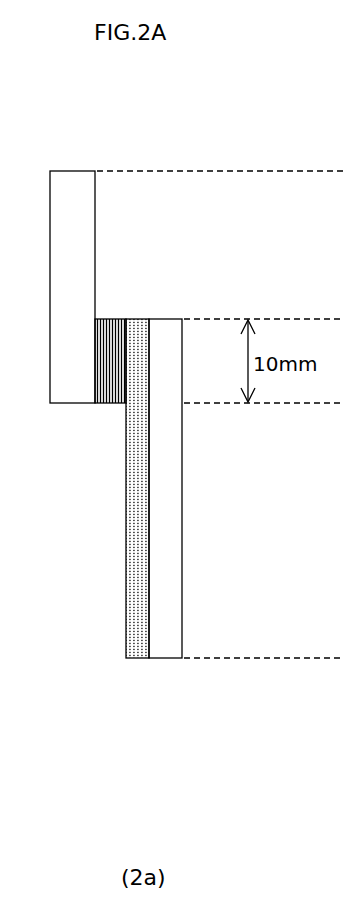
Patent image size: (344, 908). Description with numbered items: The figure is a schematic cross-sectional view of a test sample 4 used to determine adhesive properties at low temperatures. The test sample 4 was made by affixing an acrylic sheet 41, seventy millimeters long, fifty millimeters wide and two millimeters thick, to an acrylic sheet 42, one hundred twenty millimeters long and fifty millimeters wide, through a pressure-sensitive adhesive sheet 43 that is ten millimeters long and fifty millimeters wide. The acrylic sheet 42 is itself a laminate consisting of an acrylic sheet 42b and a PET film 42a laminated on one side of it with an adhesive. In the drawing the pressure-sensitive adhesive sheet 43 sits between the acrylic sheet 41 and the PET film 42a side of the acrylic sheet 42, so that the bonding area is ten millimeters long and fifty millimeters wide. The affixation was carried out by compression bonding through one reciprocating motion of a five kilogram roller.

The test sample 4 is at (143, 158).
The acrylic sheet 41 is at (72, 203).
The acrylic sheet 42 is at (121, 559).
The PET film 42a is at (137, 637).
The acrylic sheet 42b is at (172, 637).
The pressure-sensitive adhesive sheet 43 is at (116, 330).